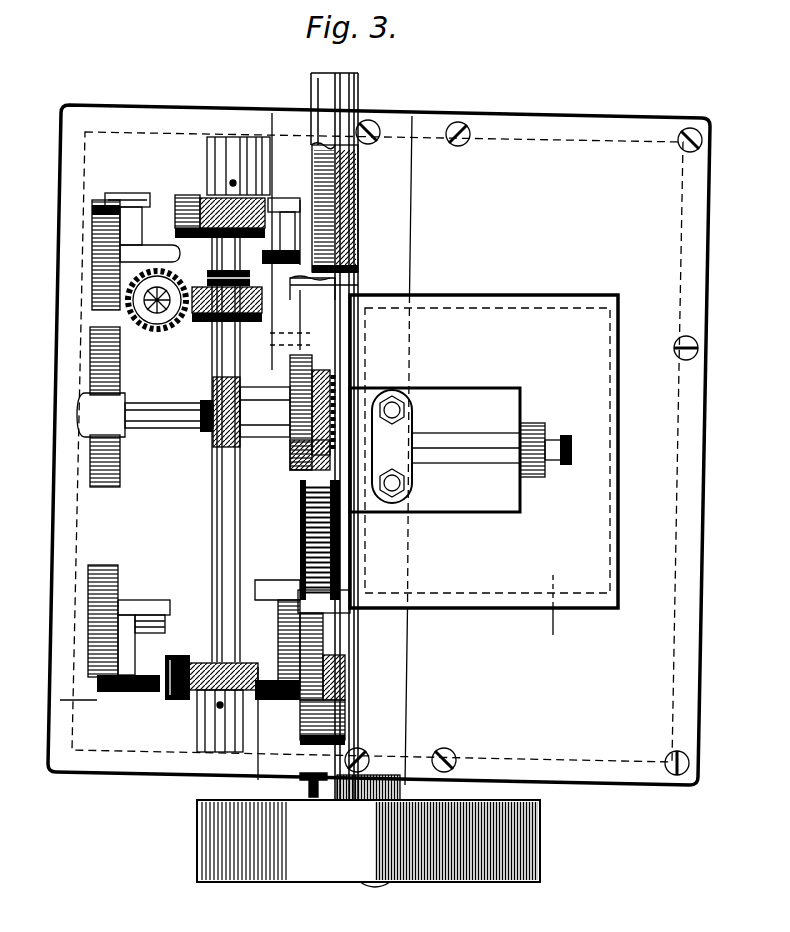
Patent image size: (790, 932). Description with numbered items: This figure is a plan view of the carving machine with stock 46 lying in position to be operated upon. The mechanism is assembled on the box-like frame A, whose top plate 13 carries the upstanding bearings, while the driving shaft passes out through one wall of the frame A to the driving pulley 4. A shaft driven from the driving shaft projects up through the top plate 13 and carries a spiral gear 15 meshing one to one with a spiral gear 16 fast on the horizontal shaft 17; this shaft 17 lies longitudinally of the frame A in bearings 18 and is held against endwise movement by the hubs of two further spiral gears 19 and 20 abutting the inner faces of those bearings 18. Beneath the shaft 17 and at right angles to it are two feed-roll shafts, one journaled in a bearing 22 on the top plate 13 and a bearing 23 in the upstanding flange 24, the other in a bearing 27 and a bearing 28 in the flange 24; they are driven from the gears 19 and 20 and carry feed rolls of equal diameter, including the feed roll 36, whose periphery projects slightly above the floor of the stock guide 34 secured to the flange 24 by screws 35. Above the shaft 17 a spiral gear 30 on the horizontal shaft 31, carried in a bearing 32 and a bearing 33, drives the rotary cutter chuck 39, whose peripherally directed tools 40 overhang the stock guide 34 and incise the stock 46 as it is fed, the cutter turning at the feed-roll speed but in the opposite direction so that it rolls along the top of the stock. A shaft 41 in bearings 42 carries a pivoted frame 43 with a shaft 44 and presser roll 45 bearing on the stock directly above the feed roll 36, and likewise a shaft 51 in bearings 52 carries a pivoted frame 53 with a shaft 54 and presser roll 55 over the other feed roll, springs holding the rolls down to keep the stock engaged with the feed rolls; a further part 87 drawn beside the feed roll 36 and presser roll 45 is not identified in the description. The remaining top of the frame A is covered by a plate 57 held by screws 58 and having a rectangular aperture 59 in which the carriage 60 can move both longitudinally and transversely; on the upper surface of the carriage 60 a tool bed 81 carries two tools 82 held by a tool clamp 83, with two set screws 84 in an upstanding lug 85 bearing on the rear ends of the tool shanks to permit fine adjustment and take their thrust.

The driving pulley 4 is at (368, 843).
The top plate 13 is at (103, 528).
The spiral gear 15 is at (167, 328).
The spiral gear 16 is at (210, 322).
The horizontal shaft 17 is at (222, 560).
The bearings 18 is at (208, 149).
The spiral gear 19 is at (200, 663).
The spiral gear 20 is at (206, 230).
The bearing 22 is at (185, 698).
The bearing 23 is at (258, 700).
The upstanding flange 24 is at (278, 178).
The bearing 27 is at (180, 205).
The bearing 28 is at (276, 210).
The spiral gear 30 is at (216, 448).
The horizontal shaft 31 is at (181, 427).
The bearing 32 is at (127, 413).
The bearing 33 is at (283, 470).
The stock guide 34 is at (335, 630).
The screws 35 is at (352, 335).
The feed roll 36 is at (340, 668).
The rotary cutter chuck 39 is at (322, 382).
The tools 40 is at (300, 355).
The shaft 41 is at (145, 615).
The bearings 42 is at (108, 590).
The frame 43 is at (130, 692).
The shaft 44 is at (158, 700).
The presser roll 45 is at (332, 710).
The stock 46 is at (340, 525).
The shaft 51 is at (130, 257).
The bearings 52 is at (345, 287).
The frame 53 is at (131, 193).
The shaft 54 is at (160, 195).
The presser roll 55 is at (325, 204).
The plate 57 is at (603, 130).
The screws 58 is at (702, 145).
The rectangular aperture 59 is at (567, 617).
The carriage 60 is at (484, 451).
The tool bed 81 is at (435, 450).
The tools 82 is at (461, 438).
The tool clamp 83 is at (392, 446).
The set screws 84 is at (572, 455).
The upstanding lug 85 is at (534, 424).
The pinion 87 is at (335, 682).
The frame A is at (58, 500).